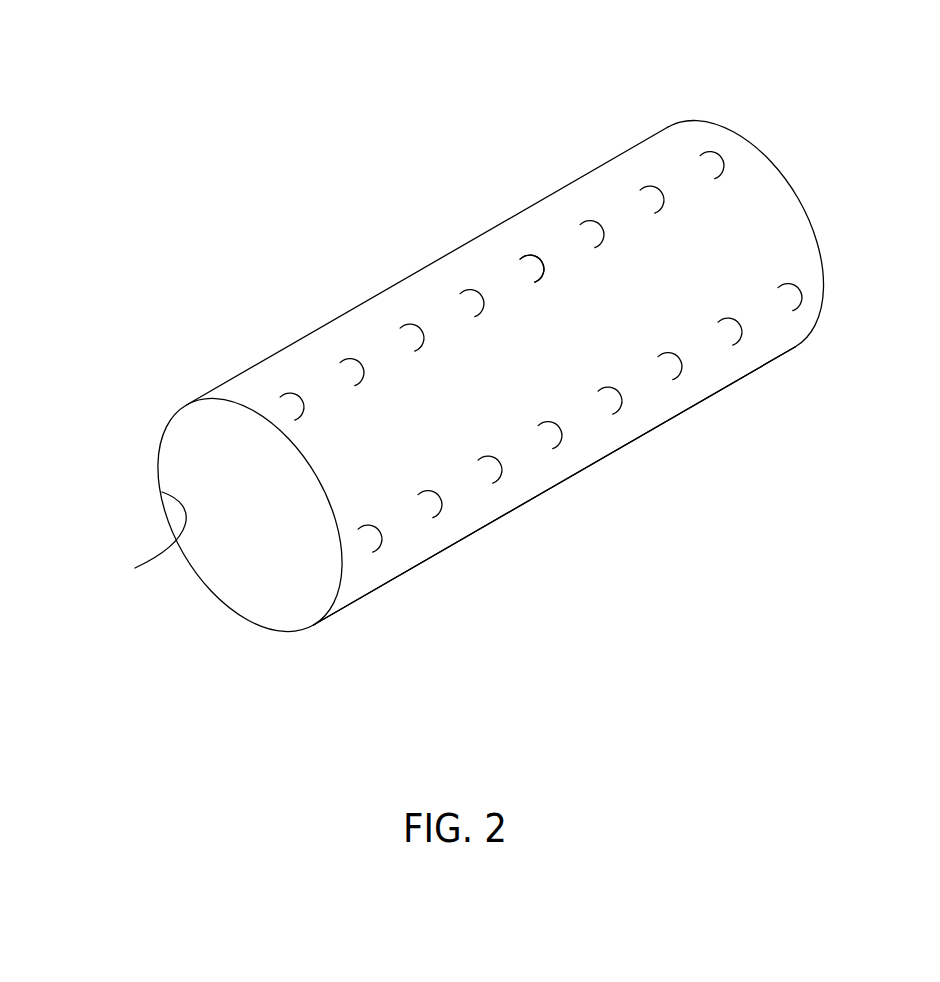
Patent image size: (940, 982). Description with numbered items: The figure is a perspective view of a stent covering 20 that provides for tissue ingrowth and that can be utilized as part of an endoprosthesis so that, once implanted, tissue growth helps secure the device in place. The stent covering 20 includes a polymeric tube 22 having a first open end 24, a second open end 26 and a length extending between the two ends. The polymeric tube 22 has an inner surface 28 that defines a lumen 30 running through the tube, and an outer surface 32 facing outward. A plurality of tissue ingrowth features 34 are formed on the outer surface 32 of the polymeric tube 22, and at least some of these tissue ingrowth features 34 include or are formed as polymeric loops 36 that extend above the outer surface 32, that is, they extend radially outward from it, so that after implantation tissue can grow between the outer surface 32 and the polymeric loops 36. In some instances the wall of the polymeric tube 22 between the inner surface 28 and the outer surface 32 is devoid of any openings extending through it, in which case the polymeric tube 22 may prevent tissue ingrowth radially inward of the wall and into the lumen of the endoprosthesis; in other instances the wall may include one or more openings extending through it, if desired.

The stent covering 20 is at (382, 270).
The polymeric tube 22 is at (622, 119).
The first open end 24 is at (313, 628).
The second open end 26 is at (819, 293).
The inner surface 28 is at (144, 539).
The lumen 30 is at (277, 528).
The outer surface 32 is at (408, 545).
The tissue ingrowth features 34 is at (287, 387).
The polymeric loops 36 is at (522, 252).